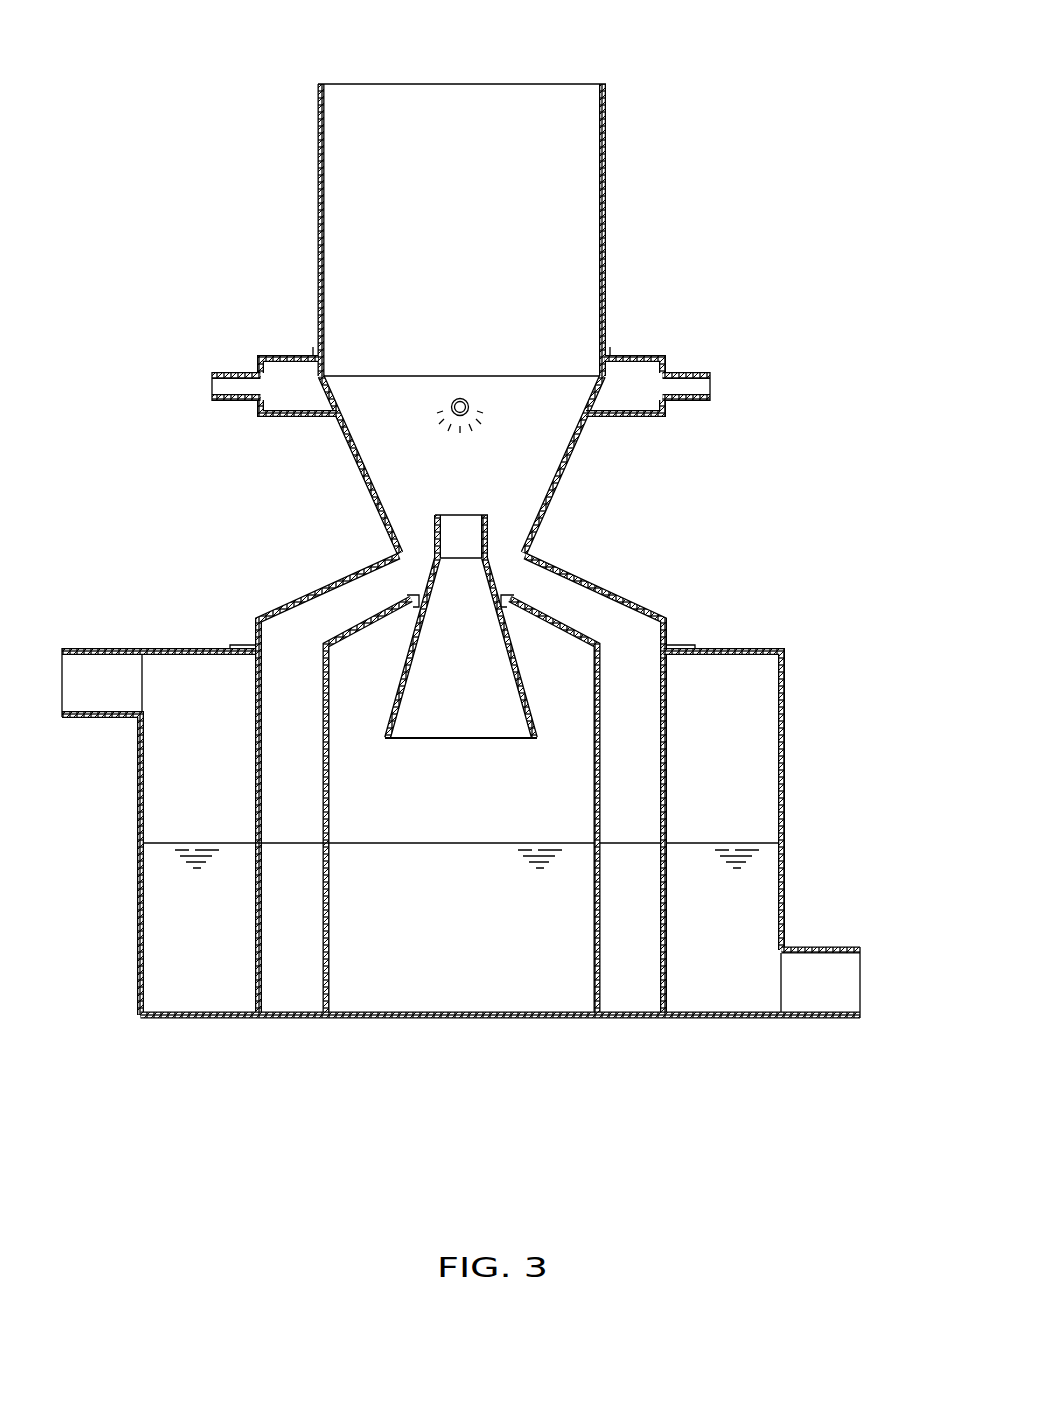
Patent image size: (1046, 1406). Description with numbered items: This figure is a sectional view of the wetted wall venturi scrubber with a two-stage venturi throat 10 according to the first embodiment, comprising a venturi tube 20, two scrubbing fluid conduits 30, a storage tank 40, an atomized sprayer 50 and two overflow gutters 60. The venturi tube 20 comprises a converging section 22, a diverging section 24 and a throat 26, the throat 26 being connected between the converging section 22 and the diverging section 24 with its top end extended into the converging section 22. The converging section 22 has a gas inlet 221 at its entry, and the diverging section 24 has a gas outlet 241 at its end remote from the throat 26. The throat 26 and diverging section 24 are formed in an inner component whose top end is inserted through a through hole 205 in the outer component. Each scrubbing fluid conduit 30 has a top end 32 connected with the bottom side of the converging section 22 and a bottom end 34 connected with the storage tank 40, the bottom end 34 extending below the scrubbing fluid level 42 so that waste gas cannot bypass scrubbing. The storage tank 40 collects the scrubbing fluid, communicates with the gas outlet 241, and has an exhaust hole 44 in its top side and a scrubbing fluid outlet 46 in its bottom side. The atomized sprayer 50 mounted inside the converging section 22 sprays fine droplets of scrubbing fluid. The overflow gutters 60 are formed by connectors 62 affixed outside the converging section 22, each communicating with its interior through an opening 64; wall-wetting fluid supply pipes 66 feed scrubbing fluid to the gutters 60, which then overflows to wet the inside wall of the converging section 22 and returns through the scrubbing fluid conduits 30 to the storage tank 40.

The wetted wall venturi scrubber with a 2-stage venturi throat 10 is at (221, 109).
The venturi tube 20 is at (586, 566).
The converging section 22 is at (526, 463).
The diverging section 24 is at (618, 646).
The throat 26 is at (470, 533).
The scrubbing fluid conduits 30 is at (677, 608).
The top end 32 is at (418, 785).
The bottom end 34 is at (275, 868).
The storage tank 40 is at (762, 843).
The liquid level 42 is at (702, 843).
The exhaust hole 44 is at (95, 657).
The scrubbing fluid outlet 46 is at (804, 1000).
The atomized sprayer 50 is at (463, 398).
The overflow gutters 60 is at (479, 365).
The connectors 62 is at (262, 418).
The opening 64 is at (318, 375).
The wall-wetting fluid supply pipes 66 is at (237, 373).
The through hole 205 is at (420, 590).
The gas inlet 221 is at (548, 100).
The gas outlet 241 is at (487, 733).